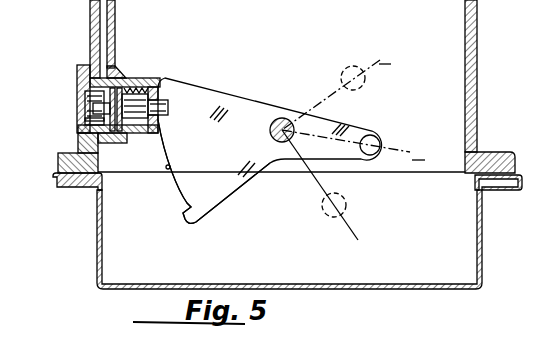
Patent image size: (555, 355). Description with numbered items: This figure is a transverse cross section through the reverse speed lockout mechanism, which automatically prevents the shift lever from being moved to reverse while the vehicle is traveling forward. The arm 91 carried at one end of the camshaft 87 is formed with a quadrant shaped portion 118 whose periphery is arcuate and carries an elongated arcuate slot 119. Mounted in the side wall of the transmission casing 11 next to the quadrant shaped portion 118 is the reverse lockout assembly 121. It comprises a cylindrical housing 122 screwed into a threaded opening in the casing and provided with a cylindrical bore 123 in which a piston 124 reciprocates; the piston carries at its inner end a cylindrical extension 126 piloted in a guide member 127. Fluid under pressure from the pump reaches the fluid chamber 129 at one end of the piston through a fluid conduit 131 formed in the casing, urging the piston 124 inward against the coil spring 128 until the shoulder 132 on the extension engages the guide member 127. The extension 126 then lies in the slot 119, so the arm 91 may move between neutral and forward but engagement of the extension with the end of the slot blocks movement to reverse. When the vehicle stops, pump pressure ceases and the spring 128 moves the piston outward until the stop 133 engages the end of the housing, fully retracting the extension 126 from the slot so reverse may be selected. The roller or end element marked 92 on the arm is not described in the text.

The transmission casing 11 is at (90, 37).
The fluid conduit 131 is at (108, 15).
The reverse lockout assembly 121 is at (72, 85).
The coil spring 128 is at (147, 78).
The shoulder 132 is at (158, 86).
The fluid chamber 129 is at (87, 97).
The stop 133 is at (101, 111).
The piston 124 is at (90, 123).
The cylindrical extension 126 is at (168, 107).
The guide member 127 is at (150, 126).
The cylindrical bore 123 is at (126, 136).
The cylindrical housing 122 is at (78, 140).
The quadrant shaped portion 118 is at (218, 95).
The elongated arcuate slot 119 is at (170, 166).
The camshaft 87 is at (282, 118).
The arm 91 is at (338, 122).
The roller 92 is at (380, 140).